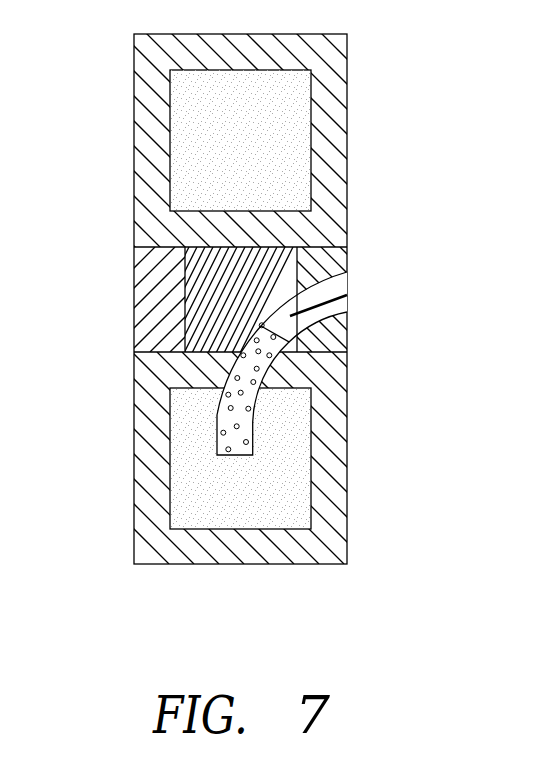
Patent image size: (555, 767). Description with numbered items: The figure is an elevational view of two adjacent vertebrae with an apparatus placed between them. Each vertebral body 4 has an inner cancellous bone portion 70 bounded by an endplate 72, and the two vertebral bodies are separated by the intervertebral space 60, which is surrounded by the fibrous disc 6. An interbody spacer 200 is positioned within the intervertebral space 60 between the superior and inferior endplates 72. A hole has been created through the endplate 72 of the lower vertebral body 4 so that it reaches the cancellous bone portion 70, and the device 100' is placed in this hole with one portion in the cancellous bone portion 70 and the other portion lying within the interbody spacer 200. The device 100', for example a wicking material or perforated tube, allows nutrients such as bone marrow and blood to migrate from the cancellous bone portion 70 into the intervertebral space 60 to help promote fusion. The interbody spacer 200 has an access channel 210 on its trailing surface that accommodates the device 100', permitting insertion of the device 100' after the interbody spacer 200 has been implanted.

The vertebral body 4 is at (390, 108).
The cancellous bone portion 70 is at (187, 110).
The intervertebral space 60 is at (244, 292).
The fibrous disc 6 is at (133, 315).
The endplate 72 is at (257, 303).
The interbody spacer 200 is at (280, 267).
The access channel 210 is at (347, 295).
The device 100' is at (342, 363).